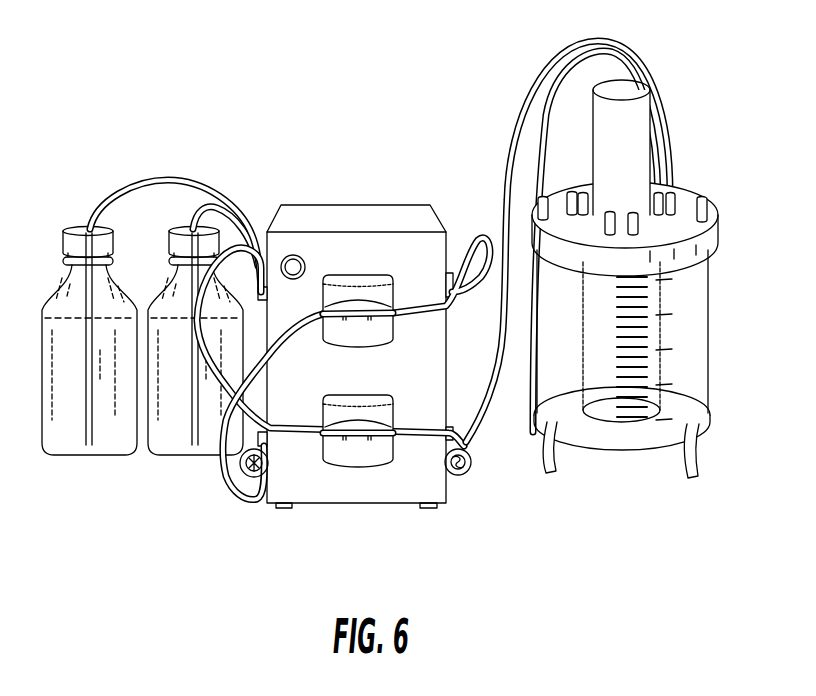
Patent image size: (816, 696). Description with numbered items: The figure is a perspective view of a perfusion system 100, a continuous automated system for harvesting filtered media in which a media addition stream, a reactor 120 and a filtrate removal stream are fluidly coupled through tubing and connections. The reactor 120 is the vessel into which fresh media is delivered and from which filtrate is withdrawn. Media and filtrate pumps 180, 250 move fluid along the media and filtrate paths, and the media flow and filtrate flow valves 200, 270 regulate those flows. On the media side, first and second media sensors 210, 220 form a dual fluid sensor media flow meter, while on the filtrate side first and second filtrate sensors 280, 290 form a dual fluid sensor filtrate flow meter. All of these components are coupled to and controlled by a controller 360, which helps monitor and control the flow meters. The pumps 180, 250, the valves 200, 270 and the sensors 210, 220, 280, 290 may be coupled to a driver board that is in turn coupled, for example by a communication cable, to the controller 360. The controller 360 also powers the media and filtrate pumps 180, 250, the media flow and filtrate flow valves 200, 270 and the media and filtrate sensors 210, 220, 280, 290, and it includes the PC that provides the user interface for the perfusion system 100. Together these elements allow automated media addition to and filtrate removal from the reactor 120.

The perfusion system 100 is at (403, 299).
The reactor 120 is at (716, 372).
The media pump 180 is at (350, 467).
The media flow valve 200 is at (229, 494).
The first media sensor 210 is at (230, 458).
The second media sensor 220 is at (223, 213).
The filtrate pump 250 is at (358, 293).
The filtrate flow valve 270 is at (471, 480).
The first filtrate sensor 280 is at (467, 440).
The second filtrate sensor 290 is at (475, 236).
The controller 360 is at (333, 195).